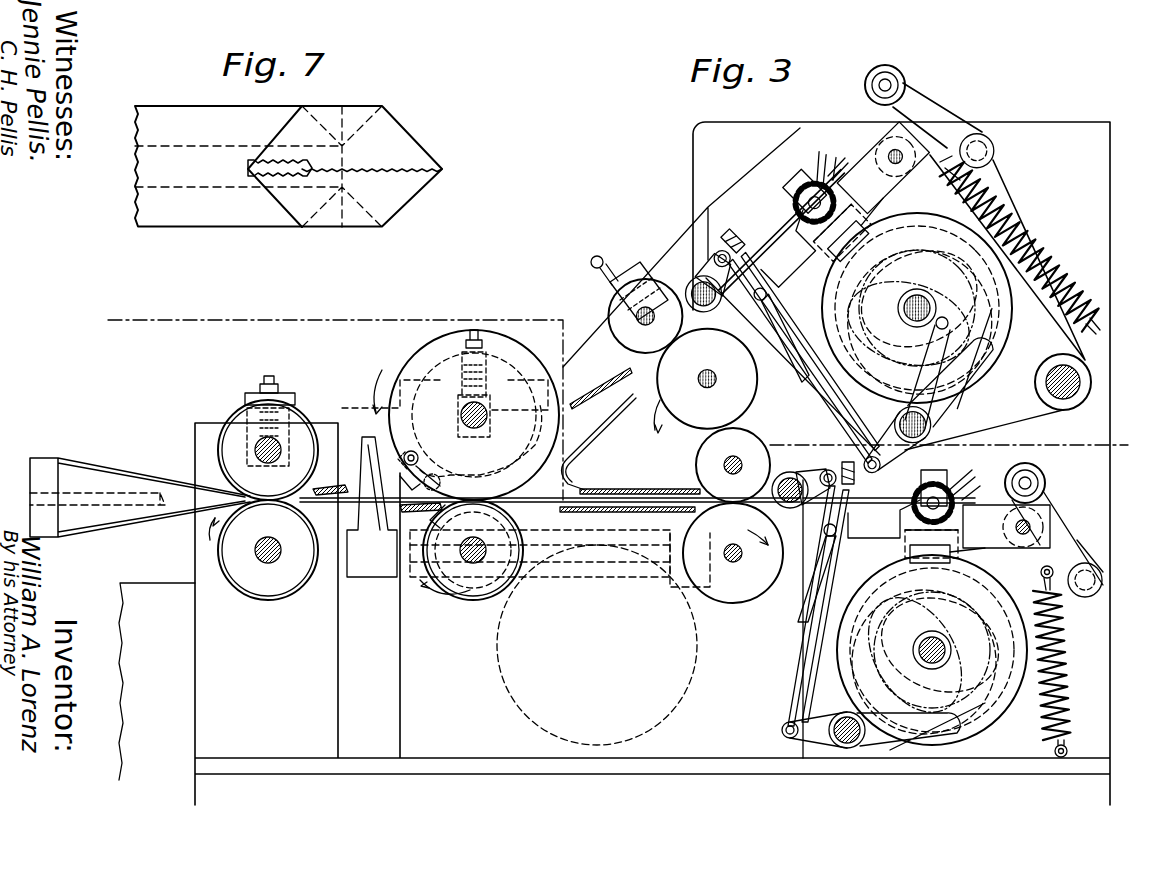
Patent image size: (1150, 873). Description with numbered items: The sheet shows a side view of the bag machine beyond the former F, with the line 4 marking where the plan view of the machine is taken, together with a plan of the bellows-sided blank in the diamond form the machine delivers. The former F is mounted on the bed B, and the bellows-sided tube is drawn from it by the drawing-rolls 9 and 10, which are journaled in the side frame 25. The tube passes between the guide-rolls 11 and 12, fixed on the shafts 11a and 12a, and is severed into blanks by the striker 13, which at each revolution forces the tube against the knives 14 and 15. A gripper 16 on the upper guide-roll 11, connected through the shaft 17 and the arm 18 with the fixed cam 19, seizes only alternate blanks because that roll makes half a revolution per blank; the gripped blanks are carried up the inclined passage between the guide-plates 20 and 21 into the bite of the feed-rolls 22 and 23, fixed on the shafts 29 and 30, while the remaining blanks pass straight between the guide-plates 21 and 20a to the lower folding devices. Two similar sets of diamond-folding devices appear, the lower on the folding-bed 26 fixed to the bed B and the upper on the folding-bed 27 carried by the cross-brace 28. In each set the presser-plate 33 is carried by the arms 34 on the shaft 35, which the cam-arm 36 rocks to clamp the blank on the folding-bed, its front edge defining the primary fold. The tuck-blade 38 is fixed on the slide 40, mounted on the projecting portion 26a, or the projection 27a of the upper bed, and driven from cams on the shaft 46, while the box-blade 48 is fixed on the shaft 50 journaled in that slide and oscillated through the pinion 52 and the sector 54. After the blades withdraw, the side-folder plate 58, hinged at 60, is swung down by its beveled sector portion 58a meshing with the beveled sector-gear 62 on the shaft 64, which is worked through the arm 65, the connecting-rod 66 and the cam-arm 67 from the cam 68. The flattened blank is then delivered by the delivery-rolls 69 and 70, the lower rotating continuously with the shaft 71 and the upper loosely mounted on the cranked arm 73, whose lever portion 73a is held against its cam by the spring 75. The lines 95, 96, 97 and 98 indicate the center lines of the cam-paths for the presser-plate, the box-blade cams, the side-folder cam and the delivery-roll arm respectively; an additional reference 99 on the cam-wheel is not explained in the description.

The section line 4 is at (614, 404).
The former F is at (86, 476).
The bed B is at (157, 681).
The drawing-roll 9 is at (225, 448).
The drawing-roll 10 is at (230, 567).
The guide-roll 11 is at (425, 362).
The shaft 11a is at (488, 412).
The guide-roll 12 is at (443, 588).
The shaft 12a is at (473, 565).
The striker 13 is at (368, 552).
The knife 14 is at (326, 498).
The knife 15 is at (340, 489).
The gripper 16 is at (412, 492).
The shaft 17 is at (435, 478).
The arm 18 is at (413, 455).
The cam 19 is at (481, 441).
The guide-plate 20 is at (593, 392).
The guide-plate 20a is at (607, 513).
The guide-plate 21 is at (590, 443).
The feed-roll 22 is at (707, 453).
The feed-roll 23 is at (709, 455).
The side frame 25 is at (652, 463).
The folding-bed 26 is at (1006, 526).
The projecting portion 26a is at (940, 480).
The folding-bed 27 is at (883, 168).
The projection 27a is at (795, 190).
The cross-brace 28 is at (1085, 382).
The shaft 29 is at (678, 280).
The shaft 30 is at (755, 554).
The presser-plate 33 is at (905, 500).
The arms 34 is at (836, 375).
The shaft 35 is at (835, 535).
The cam-arm 36 is at (833, 535).
The tuck-blade 38 is at (962, 500).
The slide 40 is at (950, 495).
The shaft 46 is at (935, 660).
The box-blade 48 is at (835, 168).
The shaft 50 is at (933, 500).
The pinion 52 is at (947, 497).
The sector 54 is at (962, 538).
The side-folder plate 58 is at (763, 138).
The beveled sector portion 58a is at (865, 445).
The hinge 60 is at (807, 477).
The beveled sector-gear 62 is at (845, 465).
The shaft 64 is at (790, 502).
The arm 65 is at (816, 474).
The connecting-rod 66 is at (808, 635).
The cam-arm 67 is at (943, 415).
The cam 68 is at (840, 668).
The delivery-roll 69 is at (1035, 475).
The delivery-roll 70 is at (1043, 518).
The shaft 71 is at (1035, 527).
The cranked arm 73 is at (982, 104).
The lever portion 73a is at (1085, 605).
The spring 75 is at (1065, 690).
The center line 95 is at (882, 624).
The center line 96 is at (960, 660).
The center line 97 is at (960, 695).
The center line 98 is at (1040, 712).
The cam wheel 99 is at (985, 583).